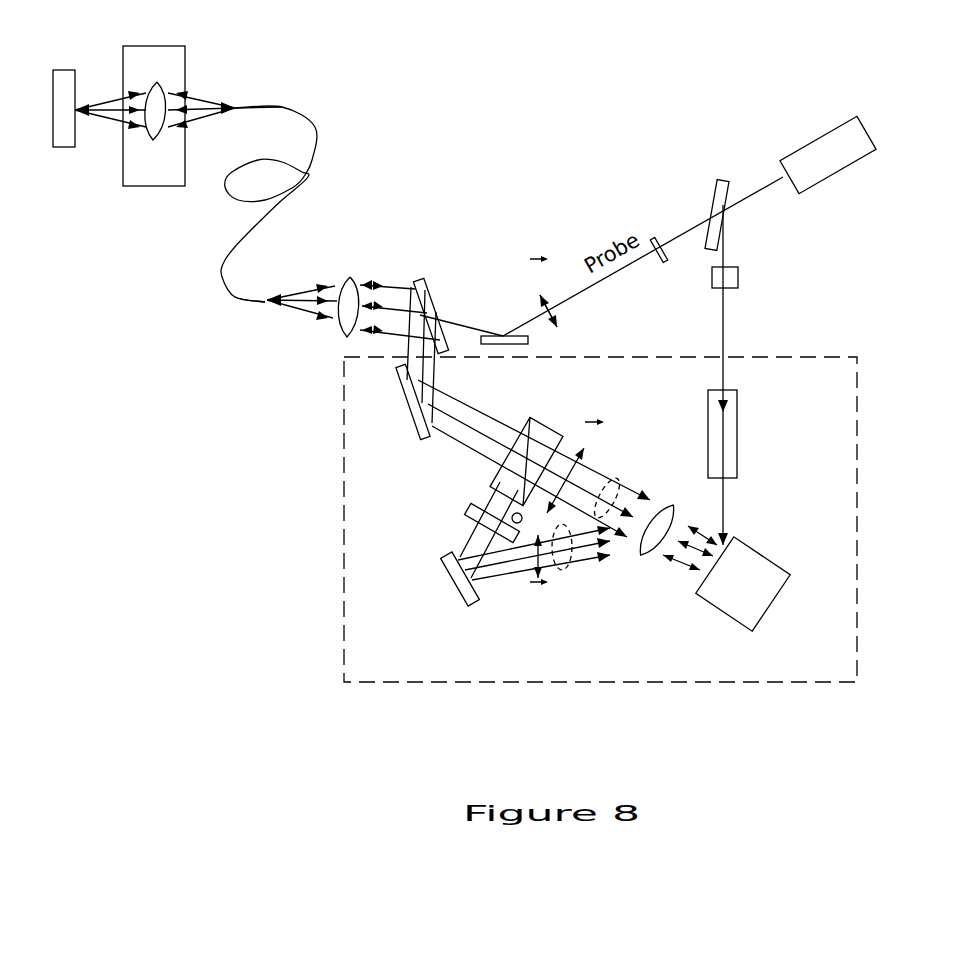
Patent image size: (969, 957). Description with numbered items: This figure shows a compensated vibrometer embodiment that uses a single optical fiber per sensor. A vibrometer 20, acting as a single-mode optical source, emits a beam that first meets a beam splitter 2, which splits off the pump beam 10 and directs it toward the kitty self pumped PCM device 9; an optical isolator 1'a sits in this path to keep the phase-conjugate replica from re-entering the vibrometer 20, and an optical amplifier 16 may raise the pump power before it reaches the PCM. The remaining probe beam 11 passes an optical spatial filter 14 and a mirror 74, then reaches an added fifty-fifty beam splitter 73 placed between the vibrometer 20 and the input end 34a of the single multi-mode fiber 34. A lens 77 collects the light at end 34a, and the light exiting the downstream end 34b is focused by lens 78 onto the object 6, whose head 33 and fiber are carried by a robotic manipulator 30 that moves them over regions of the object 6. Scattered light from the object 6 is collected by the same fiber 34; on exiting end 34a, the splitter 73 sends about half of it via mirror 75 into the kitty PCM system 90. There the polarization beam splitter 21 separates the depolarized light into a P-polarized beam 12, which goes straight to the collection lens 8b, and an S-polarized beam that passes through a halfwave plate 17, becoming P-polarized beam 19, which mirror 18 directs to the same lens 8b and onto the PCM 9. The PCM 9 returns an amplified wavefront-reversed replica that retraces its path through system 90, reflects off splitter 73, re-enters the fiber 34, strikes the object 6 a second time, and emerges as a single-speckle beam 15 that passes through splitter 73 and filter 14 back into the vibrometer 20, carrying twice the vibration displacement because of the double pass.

The object 6 is at (63, 78).
The fiber head 33 is at (172, 77).
The lens 78 is at (149, 127).
The robotic manipulator 30 is at (152, 185).
The single multi-mode fiber 34 is at (308, 184).
The downstream end of fiber 34b is at (235, 100).
The input end of fiber 34a is at (267, 305).
The lens 77 is at (347, 293).
The 50/50 beam splitter 73 is at (420, 282).
The mirror 74 is at (513, 336).
The probe beam 11 is at (525, 322).
The phase-conjugate replica beam 15 is at (548, 276).
The optical spatial filter 14 is at (662, 262).
The beam splitter 2 is at (715, 203).
The vibrometer 20 is at (832, 175).
The optical isolator 1'a is at (753, 275).
The pump beam 10 is at (725, 312).
The optical amplifier 16 is at (728, 452).
The kitty self pumped PCM device 9 is at (750, 594).
The collection lens 8b is at (640, 547).
The mirror 75 is at (405, 392).
The polarization beam splitter 21 is at (540, 428).
The reflected beam 12 is at (618, 483).
The halfwave plate 17 is at (468, 513).
The mirror 18 is at (468, 593).
The rotated beam 19 is at (562, 573).
The kitty PCM system 90 is at (383, 683).